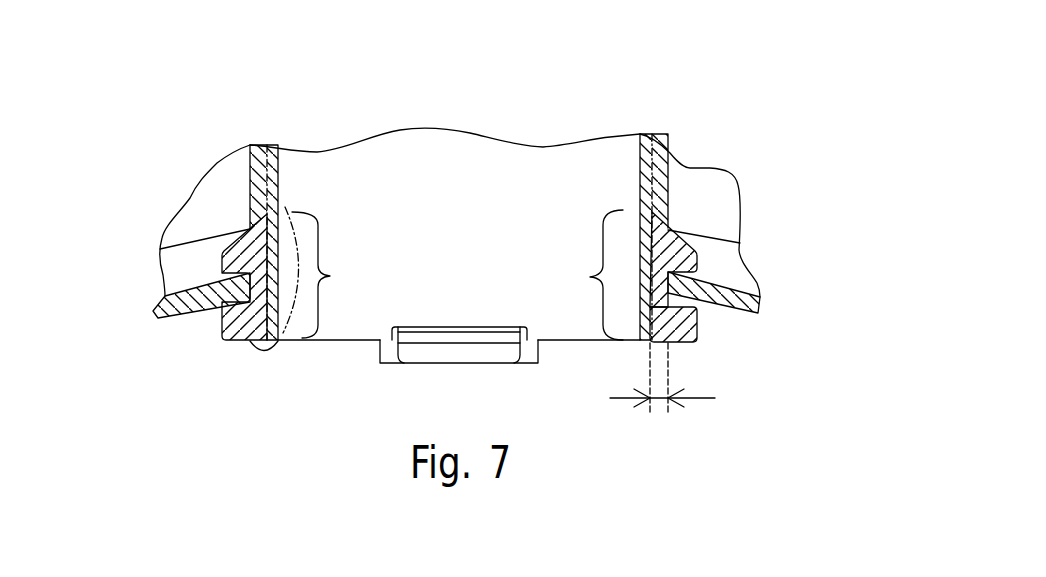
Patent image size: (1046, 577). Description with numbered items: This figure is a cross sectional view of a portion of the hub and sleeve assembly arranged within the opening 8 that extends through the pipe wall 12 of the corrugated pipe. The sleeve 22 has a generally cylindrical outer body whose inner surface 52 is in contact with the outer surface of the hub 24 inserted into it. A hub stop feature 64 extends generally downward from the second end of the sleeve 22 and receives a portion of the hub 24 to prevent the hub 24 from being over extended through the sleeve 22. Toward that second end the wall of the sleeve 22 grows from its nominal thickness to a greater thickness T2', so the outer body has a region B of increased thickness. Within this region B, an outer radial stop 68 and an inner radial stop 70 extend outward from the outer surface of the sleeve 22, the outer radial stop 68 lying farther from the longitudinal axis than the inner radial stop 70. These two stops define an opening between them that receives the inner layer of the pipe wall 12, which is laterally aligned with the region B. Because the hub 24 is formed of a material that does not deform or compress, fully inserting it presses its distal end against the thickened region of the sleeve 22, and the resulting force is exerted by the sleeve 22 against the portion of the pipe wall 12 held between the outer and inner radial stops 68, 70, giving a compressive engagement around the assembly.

The opening 8 is at (247, 220).
The pipe wall 12 is at (188, 312).
The sleeve 22 is at (643, 169).
The hub 24 is at (670, 177).
The inner surface 52 is at (279, 177).
The hub stop feature 64 is at (462, 352).
The outer radial stop 68 is at (697, 265).
The inner radial stop 70 is at (697, 322).
The region of increased thickness B is at (453, 273).
The increased wall thickness T2' is at (730, 388).